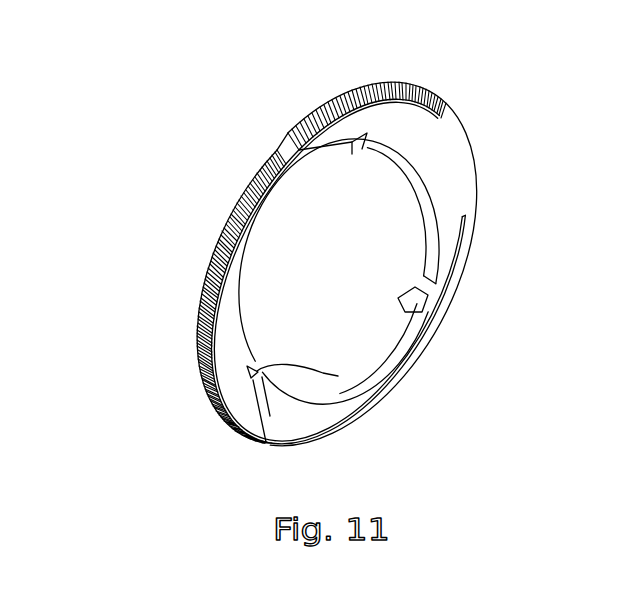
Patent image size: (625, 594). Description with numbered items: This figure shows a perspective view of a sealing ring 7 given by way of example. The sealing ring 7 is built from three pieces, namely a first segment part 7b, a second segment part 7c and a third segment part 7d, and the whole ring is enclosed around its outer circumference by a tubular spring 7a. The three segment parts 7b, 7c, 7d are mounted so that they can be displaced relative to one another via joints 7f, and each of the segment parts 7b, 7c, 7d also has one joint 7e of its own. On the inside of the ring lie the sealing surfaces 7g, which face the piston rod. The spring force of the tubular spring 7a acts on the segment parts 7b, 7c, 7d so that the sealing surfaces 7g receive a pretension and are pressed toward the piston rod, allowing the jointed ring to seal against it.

The sealing ring 7 is at (523, 98).
The tubular spring 7a is at (368, 82).
The first segment part 7b is at (458, 167).
The second segment part 7c is at (393, 372).
The third segment part 7d is at (238, 300).
The joint 7e is at (357, 150).
The joints 7f is at (322, 153).
The sealing surfaces 7g is at (424, 245).